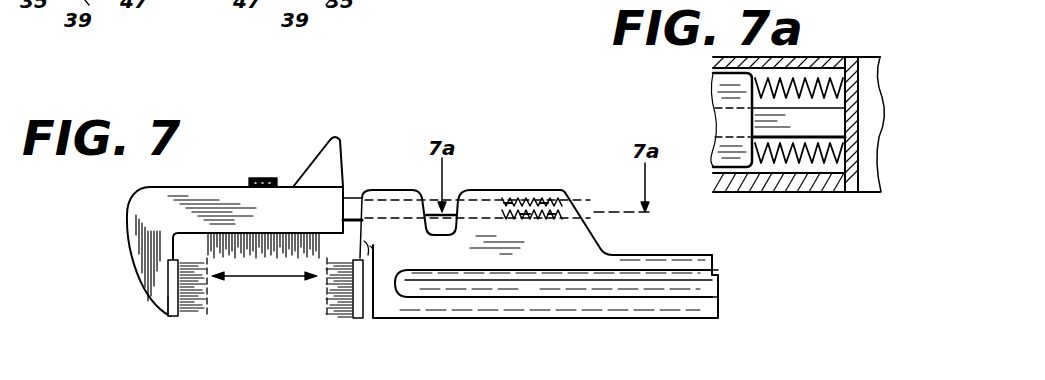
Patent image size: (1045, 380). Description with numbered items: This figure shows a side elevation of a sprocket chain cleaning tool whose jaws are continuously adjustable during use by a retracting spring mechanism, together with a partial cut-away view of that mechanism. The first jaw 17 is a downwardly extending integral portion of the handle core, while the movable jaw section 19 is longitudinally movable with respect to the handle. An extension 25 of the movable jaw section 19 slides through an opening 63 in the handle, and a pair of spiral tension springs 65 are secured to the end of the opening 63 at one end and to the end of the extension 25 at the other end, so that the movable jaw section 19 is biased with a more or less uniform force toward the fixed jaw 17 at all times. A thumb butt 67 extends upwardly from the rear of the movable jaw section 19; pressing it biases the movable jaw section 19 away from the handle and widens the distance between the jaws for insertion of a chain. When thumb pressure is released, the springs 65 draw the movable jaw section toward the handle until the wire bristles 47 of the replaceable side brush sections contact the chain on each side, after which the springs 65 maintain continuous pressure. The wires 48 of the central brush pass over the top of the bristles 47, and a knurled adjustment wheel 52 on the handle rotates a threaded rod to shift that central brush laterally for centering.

In FIG. 7, the first jaw 17 is at (390, 305).
In FIG. 7a, the first jaw 17 is at (764, 184).
In FIG. 7, the movable jaw section 19 is at (208, 187).
In FIG. 7, the extension 25 is at (354, 204).
In FIG. 7a, the extension 25 is at (717, 86).
In FIG. 7, the wires 47 is at (192, 318).
In FIG. 7, the wires 48 is at (242, 250).
In FIG. 7, the knurled adjustment wheel 52 is at (263, 178).
In FIG. 7, the opening 63 is at (560, 217).
In FIG. 7, the spiral tension springs 65 is at (537, 202).
In FIG. 7a, the spiral tension springs 65 is at (810, 76).
In FIG. 7, the thumb butt 67 is at (348, 150).